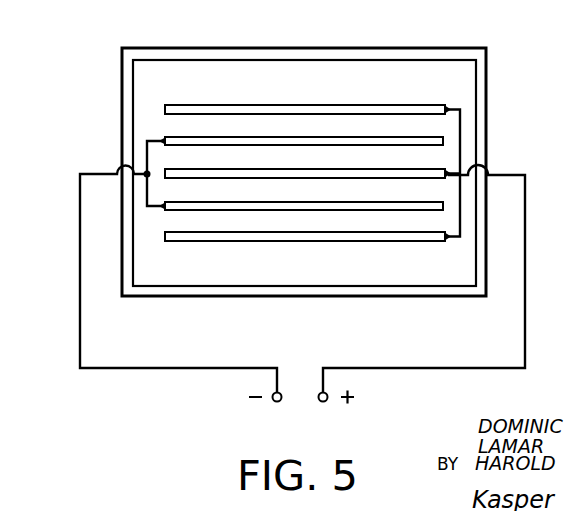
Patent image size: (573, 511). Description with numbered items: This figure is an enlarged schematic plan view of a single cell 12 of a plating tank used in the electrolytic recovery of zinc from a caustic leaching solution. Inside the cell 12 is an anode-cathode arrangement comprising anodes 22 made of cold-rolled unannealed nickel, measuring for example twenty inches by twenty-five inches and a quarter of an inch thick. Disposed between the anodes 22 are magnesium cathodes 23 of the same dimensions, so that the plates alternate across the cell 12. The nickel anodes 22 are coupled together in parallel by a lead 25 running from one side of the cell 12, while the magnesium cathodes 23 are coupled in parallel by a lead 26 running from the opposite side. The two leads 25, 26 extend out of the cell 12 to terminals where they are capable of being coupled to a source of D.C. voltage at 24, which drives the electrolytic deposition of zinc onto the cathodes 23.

The cell 12 is at (428, 48).
The anodes 22 is at (378, 234).
The magnesium cathodes 23 is at (171, 204).
The source of D.C. voltage 24 is at (303, 380).
The lead 25 is at (525, 288).
The lead 26 is at (80, 282).